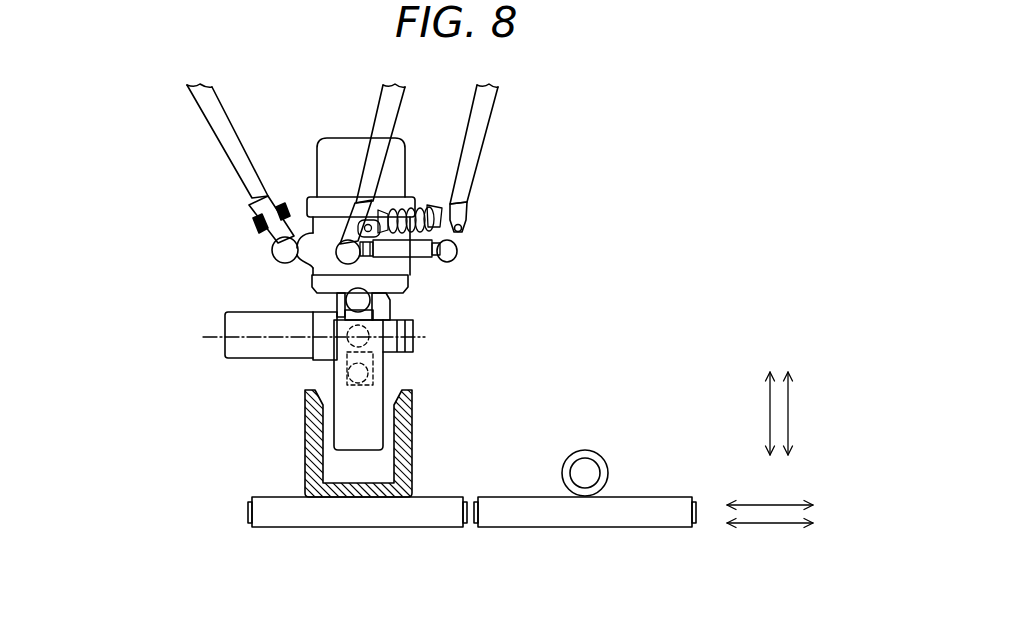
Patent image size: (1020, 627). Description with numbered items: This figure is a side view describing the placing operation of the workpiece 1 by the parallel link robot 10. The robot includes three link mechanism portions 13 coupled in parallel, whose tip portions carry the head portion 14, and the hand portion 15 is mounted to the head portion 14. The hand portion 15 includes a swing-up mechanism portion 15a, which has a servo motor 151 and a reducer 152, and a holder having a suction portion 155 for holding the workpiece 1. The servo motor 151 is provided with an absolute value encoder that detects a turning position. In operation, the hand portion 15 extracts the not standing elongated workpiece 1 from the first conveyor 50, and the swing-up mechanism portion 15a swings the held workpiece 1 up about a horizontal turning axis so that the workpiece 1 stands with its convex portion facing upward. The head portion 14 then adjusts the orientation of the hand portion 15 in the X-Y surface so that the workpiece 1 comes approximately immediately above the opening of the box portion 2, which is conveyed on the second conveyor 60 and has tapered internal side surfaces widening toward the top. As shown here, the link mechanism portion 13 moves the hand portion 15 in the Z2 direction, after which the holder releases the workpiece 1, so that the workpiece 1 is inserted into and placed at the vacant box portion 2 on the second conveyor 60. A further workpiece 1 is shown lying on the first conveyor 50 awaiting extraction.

The parallel link robot 10 is at (522, 120).
The link mechanism portion 13 is at (178, 132).
The head portion 14 is at (333, 138).
The hand portion 15 is at (257, 372).
The servo motor 151 is at (258, 312).
The reducer 152 is at (318, 313).
The swing-up mechanism portion 15a is at (415, 337).
The suction portion 155 is at (378, 368).
The workpiece 1 is at (383, 380).
The box portion 2 is at (305, 410).
The second conveyor 60 is at (445, 497).
The first conveyor 50 is at (663, 497).